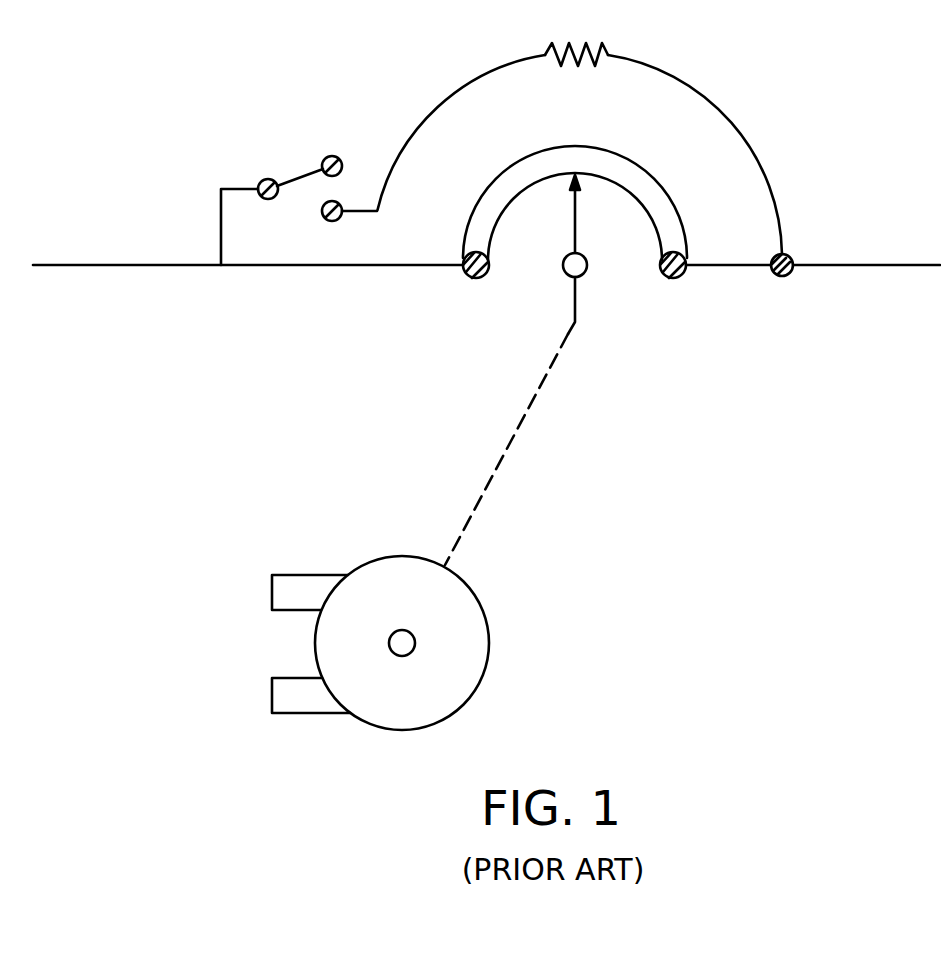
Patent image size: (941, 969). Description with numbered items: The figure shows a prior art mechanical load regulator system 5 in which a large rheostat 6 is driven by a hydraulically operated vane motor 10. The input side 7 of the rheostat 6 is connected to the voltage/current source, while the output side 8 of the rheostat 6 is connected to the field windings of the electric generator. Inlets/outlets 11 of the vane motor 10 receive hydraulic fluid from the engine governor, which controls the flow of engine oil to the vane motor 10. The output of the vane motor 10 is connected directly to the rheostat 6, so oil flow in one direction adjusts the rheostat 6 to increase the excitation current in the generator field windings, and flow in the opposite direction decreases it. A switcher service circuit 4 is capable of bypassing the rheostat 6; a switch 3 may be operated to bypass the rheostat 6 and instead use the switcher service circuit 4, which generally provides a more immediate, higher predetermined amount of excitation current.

The switch 3 is at (300, 176).
The switcher service circuit 4 is at (470, 78).
The mechanical load regulator system 5 is at (805, 359).
The rheostat 6 is at (658, 183).
The input side 7 is at (131, 265).
The output side 8 is at (895, 265).
The vane motor 10 is at (489, 633).
The inlets/outlets 11 is at (272, 592).